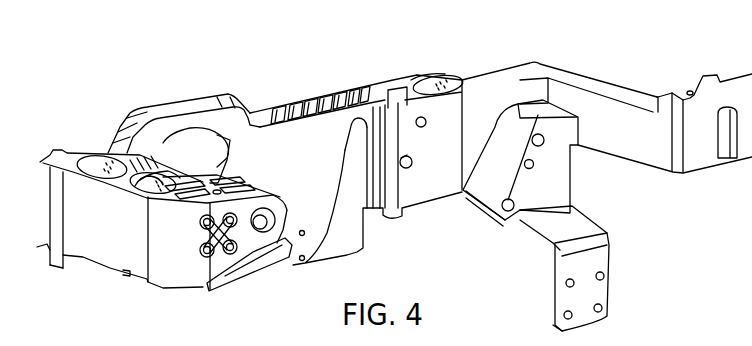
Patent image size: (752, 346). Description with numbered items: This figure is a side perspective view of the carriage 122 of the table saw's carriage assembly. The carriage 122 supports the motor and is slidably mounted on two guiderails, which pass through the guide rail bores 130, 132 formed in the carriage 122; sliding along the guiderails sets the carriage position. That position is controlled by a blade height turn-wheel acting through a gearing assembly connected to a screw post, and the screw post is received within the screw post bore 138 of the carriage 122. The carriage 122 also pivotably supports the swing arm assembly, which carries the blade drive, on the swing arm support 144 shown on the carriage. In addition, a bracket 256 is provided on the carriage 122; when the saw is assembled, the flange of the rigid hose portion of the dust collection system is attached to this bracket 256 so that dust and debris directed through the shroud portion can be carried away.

The carriage 122 is at (111, 88).
The guide rail bore 130 is at (97, 158).
The guide rail bore 132 is at (428, 77).
The screw post bore 138 is at (168, 198).
The swing arm support 144 is at (260, 250).
The bracket 256 is at (612, 275).